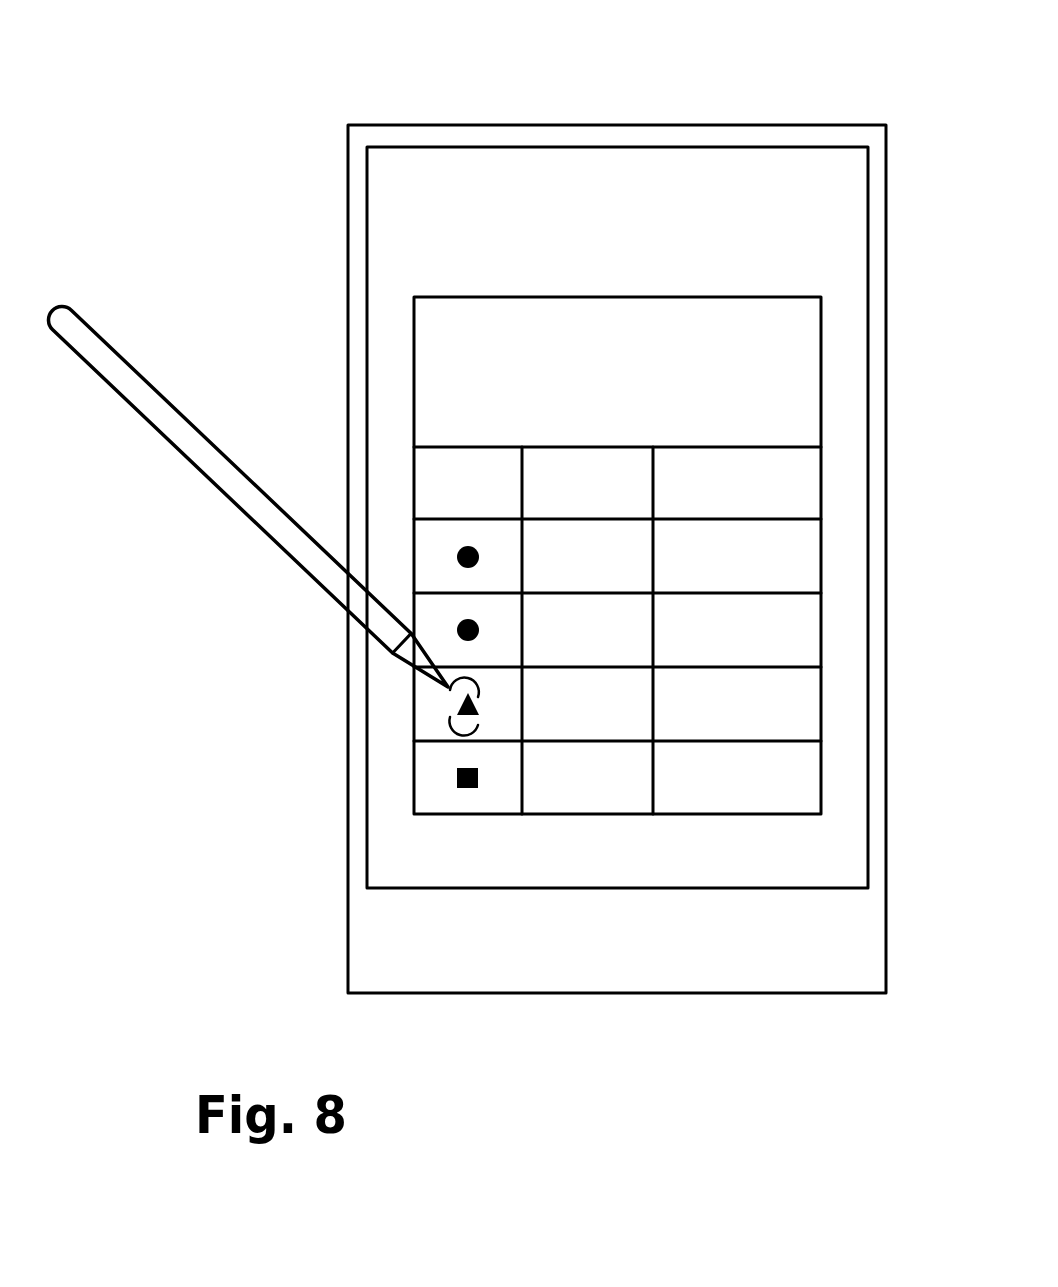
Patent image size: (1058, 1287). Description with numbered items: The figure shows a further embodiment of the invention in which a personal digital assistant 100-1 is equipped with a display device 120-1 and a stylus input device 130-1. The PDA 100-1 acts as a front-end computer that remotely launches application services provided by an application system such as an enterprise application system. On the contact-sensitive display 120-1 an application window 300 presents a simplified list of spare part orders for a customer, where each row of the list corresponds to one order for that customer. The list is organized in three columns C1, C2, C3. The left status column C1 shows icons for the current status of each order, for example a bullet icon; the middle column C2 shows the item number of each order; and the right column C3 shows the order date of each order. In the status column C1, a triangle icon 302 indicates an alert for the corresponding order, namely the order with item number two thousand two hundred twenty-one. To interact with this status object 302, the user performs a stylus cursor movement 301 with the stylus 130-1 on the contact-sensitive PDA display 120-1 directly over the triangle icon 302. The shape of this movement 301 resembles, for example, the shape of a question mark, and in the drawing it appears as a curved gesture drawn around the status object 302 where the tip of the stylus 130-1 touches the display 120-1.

The personal digital assistant 100-1 is at (428, 120).
The display device 120-1 is at (672, 147).
The stylus input device 130-1 is at (108, 358).
The application window 300 is at (531, 540).
The stylus cursor movement 301 is at (448, 718).
The triangle icon 302 is at (460, 703).
The status column C1 is at (382, 662).
The item number column C2 is at (620, 800).
The order date column C3 is at (747, 797).